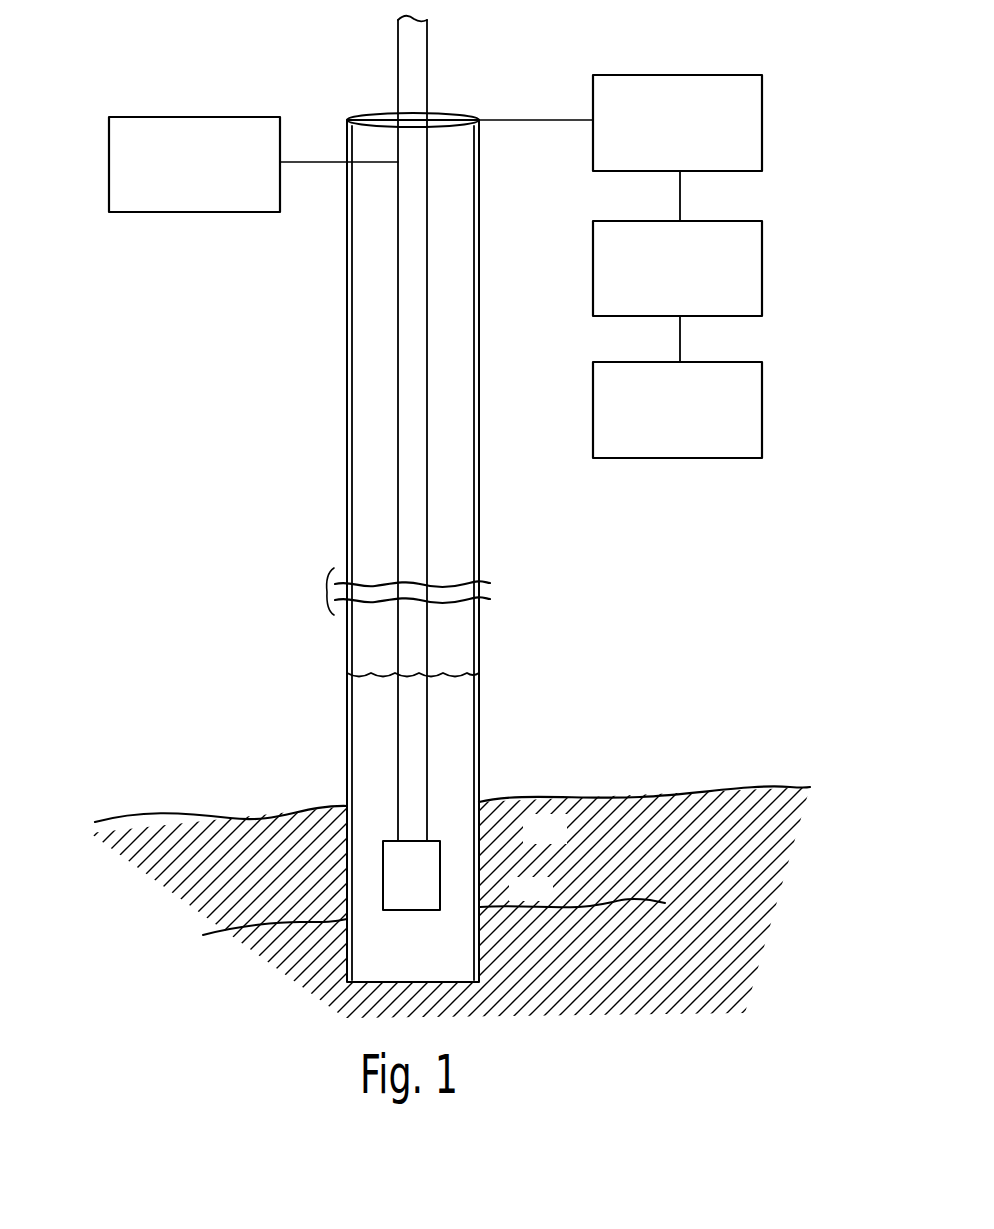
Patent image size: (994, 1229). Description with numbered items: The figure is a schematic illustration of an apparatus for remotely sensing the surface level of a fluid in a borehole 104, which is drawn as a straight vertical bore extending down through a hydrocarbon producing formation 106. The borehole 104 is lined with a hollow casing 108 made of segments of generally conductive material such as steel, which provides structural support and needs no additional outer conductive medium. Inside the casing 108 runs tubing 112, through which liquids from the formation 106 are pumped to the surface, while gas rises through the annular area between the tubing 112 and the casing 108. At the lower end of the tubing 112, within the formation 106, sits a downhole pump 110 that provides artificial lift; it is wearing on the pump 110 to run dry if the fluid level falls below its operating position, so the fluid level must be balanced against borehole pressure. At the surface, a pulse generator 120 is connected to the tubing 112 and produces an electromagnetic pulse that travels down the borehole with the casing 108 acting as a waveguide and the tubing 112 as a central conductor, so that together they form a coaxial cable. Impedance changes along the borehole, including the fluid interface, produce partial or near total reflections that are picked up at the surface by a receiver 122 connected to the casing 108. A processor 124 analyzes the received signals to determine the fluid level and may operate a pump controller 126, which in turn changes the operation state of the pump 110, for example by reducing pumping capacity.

The borehole 104 is at (452, 214).
The hydrocarbon producing formation 106 is at (563, 840).
The hollow casing 108 is at (480, 312).
The downhole pump 110 is at (440, 878).
The tubing 112 is at (427, 490).
The pulse generator 120 is at (109, 140).
The receiver 122 is at (763, 108).
The processor 124 is at (763, 253).
The pump controller 126 is at (763, 393).